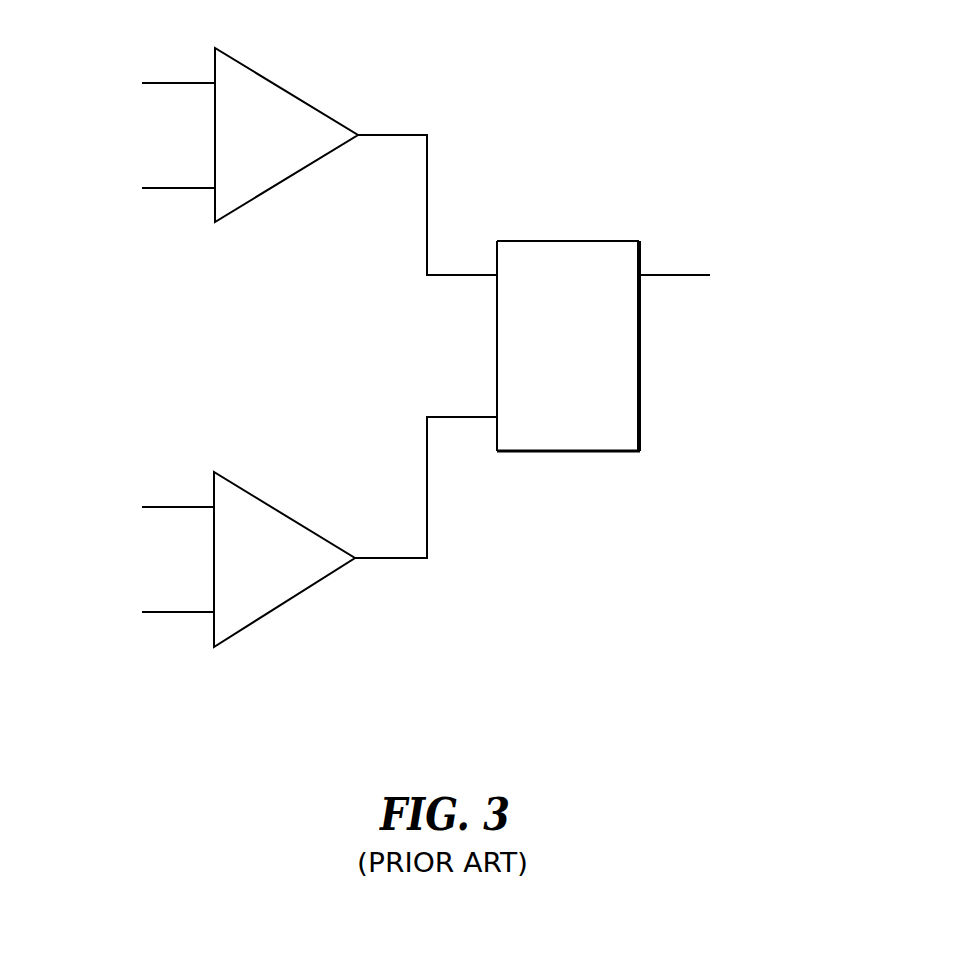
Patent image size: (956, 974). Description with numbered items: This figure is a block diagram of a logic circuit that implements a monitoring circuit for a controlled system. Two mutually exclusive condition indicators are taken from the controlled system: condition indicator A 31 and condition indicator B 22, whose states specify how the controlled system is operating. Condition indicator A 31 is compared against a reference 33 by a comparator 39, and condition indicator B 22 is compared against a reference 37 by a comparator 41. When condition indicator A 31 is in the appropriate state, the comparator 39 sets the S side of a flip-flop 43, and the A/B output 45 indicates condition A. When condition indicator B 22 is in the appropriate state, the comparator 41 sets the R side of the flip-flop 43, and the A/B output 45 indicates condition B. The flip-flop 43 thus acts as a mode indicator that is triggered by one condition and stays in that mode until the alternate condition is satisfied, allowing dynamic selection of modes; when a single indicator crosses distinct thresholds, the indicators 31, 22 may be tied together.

The condition indicator B 22 is at (78, 528).
The condition indicator A 31 is at (78, 102).
The reference 33 is at (78, 208).
The reference 37 is at (78, 632).
The comparator 39 is at (262, 73).
The comparator 41 is at (260, 618).
The flip-flop 43 is at (587, 452).
The A/B output 45 is at (800, 295).